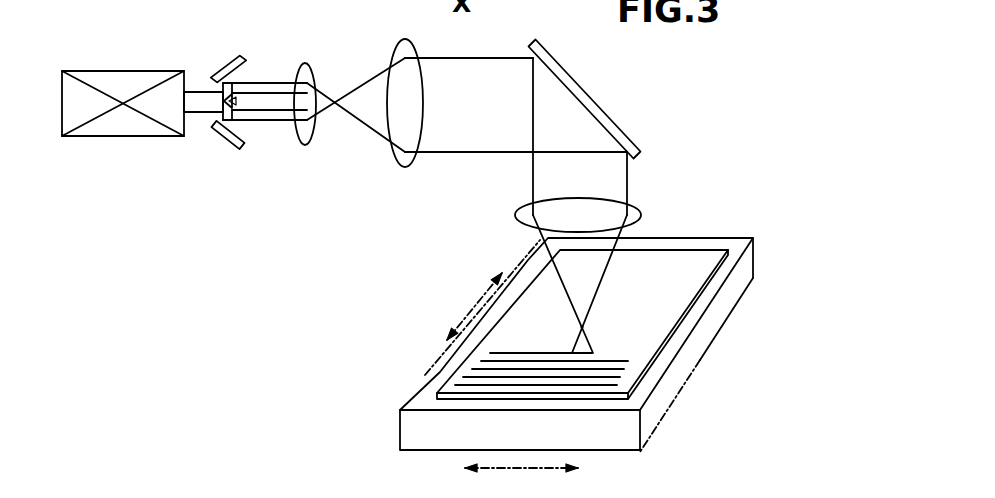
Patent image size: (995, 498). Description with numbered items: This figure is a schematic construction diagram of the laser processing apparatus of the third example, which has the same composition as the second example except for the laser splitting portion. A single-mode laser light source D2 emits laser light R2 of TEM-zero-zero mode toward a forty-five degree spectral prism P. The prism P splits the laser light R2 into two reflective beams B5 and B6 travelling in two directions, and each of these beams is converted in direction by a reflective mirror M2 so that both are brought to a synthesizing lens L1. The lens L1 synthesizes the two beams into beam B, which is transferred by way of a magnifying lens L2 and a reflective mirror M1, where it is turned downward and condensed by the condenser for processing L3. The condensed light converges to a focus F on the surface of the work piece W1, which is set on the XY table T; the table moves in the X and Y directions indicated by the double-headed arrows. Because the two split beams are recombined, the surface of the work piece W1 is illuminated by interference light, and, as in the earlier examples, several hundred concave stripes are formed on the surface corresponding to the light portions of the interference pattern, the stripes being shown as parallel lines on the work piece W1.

The laser light source D2 is at (124, 79).
The laser light R2 is at (193, 96).
The reflective mirror M2 is at (240, 68).
The reflective beam B5 is at (270, 86).
The reflective beam B6 is at (283, 124).
The 45° spectral prism P is at (238, 102).
The synthesizing lens L1 is at (309, 74).
The magnifying lens L2 is at (413, 42).
The reflective mirror M1 is at (590, 97).
The beam B is at (607, 190).
The condenser for processing L3 is at (645, 218).
The focal point / focused spot F is at (583, 327).
The XY table T is at (399, 412).
The work piece W1 is at (667, 334).
The X direction of stage movement X is at (542, 468).
The Y direction of stage movement Y is at (466, 320).